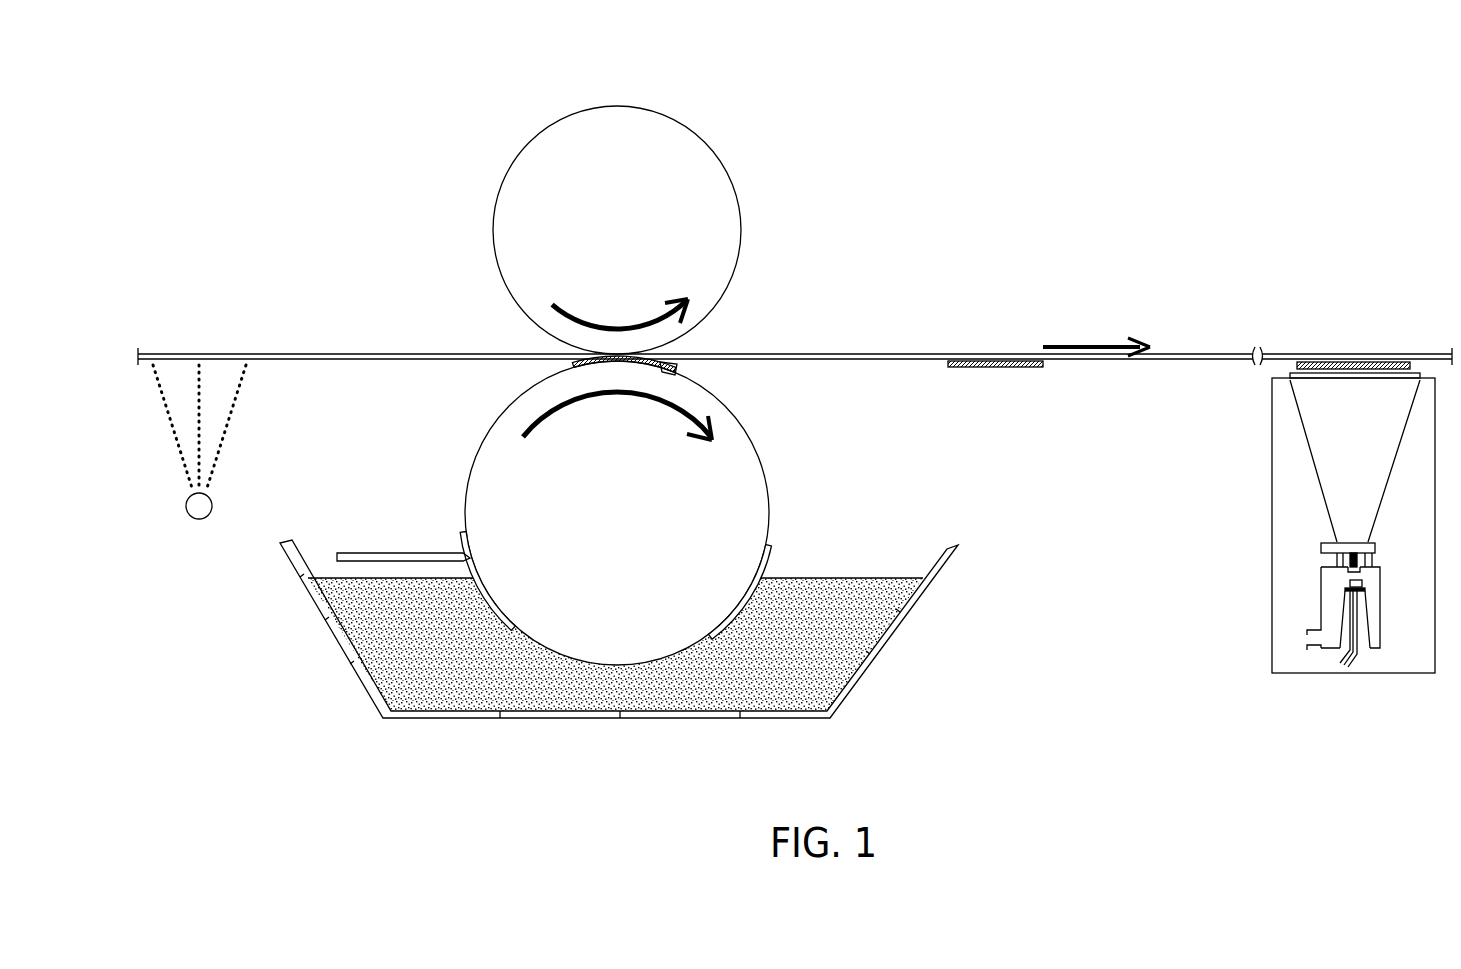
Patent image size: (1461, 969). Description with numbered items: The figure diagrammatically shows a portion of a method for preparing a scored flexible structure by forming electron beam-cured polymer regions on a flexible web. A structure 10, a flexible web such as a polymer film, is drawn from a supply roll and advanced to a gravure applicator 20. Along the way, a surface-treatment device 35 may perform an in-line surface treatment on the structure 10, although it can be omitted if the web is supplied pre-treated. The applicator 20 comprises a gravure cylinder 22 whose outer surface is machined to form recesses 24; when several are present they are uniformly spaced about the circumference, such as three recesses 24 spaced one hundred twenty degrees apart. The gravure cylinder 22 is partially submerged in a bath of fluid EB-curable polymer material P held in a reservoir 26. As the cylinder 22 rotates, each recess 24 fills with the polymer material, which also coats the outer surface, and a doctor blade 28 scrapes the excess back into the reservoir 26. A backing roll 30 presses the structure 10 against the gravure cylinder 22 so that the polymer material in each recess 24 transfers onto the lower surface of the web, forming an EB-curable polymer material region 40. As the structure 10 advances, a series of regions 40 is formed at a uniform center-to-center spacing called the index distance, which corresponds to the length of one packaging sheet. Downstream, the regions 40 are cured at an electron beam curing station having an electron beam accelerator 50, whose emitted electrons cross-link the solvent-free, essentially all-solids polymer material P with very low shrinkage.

The structure 10 is at (387, 355).
The gravure applicator 20 is at (677, 82).
The gravure cylinder 22 is at (742, 485).
The recesses 24 is at (662, 374).
The reservoir 26 is at (947, 548).
The doctor blade 28 is at (417, 553).
The backing roll 30 is at (728, 202).
The surface-treatment device 35 is at (199, 513).
The EB-curable polymer material region 40 is at (993, 367).
The electron beam accelerator 50 is at (1247, 628).
The EB-curable polymer material P is at (327, 583).